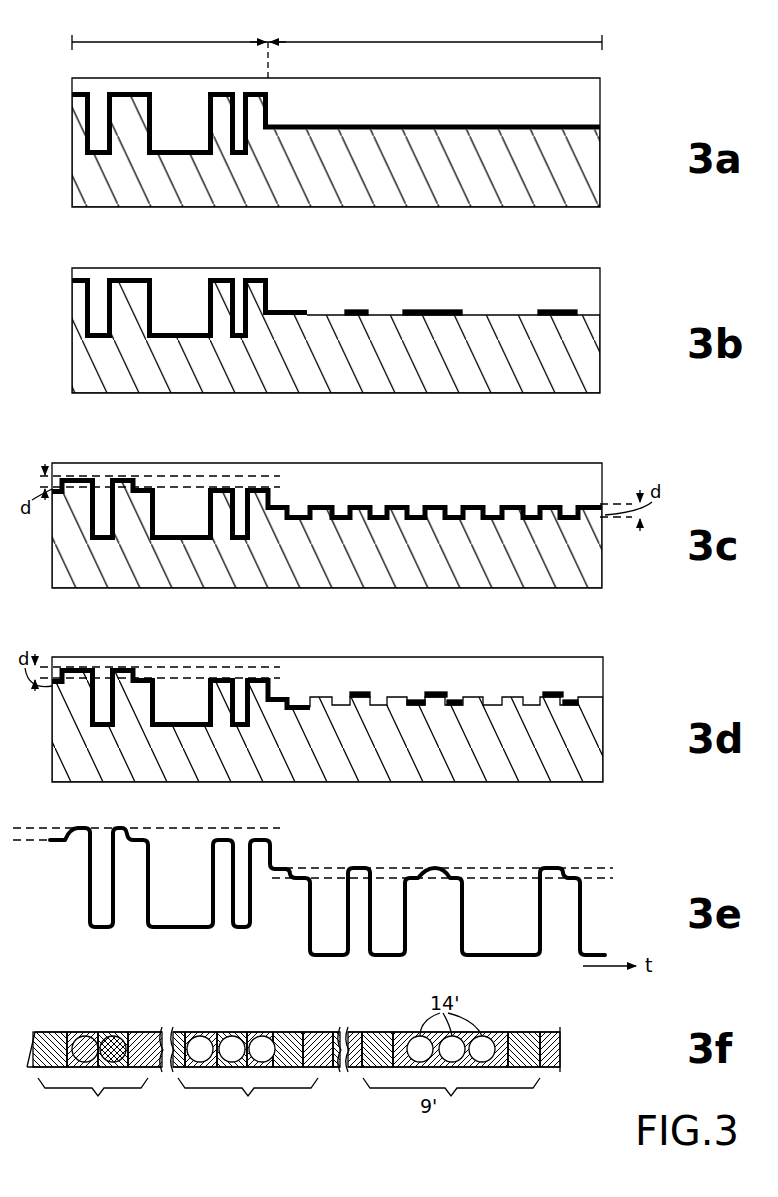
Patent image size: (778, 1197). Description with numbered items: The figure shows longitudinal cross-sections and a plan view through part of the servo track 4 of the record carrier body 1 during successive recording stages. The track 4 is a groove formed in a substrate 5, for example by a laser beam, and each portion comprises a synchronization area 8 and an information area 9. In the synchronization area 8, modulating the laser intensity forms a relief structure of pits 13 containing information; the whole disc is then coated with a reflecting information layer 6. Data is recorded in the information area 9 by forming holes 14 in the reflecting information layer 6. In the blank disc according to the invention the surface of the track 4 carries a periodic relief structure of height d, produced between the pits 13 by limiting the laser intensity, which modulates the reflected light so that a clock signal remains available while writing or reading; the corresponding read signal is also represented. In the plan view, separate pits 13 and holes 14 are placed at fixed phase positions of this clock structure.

The record carrier body 1 is at (540, 68).
The servo track 4 is at (609, 110).
The substrate 5 is at (588, 175).
The reflecting information layer 6 is at (598, 128).
The synchronization area 8 is at (180, 40).
The information area 9 is at (417, 40).
The pits 13 is at (237, 96).
The holes 14 is at (478, 309).